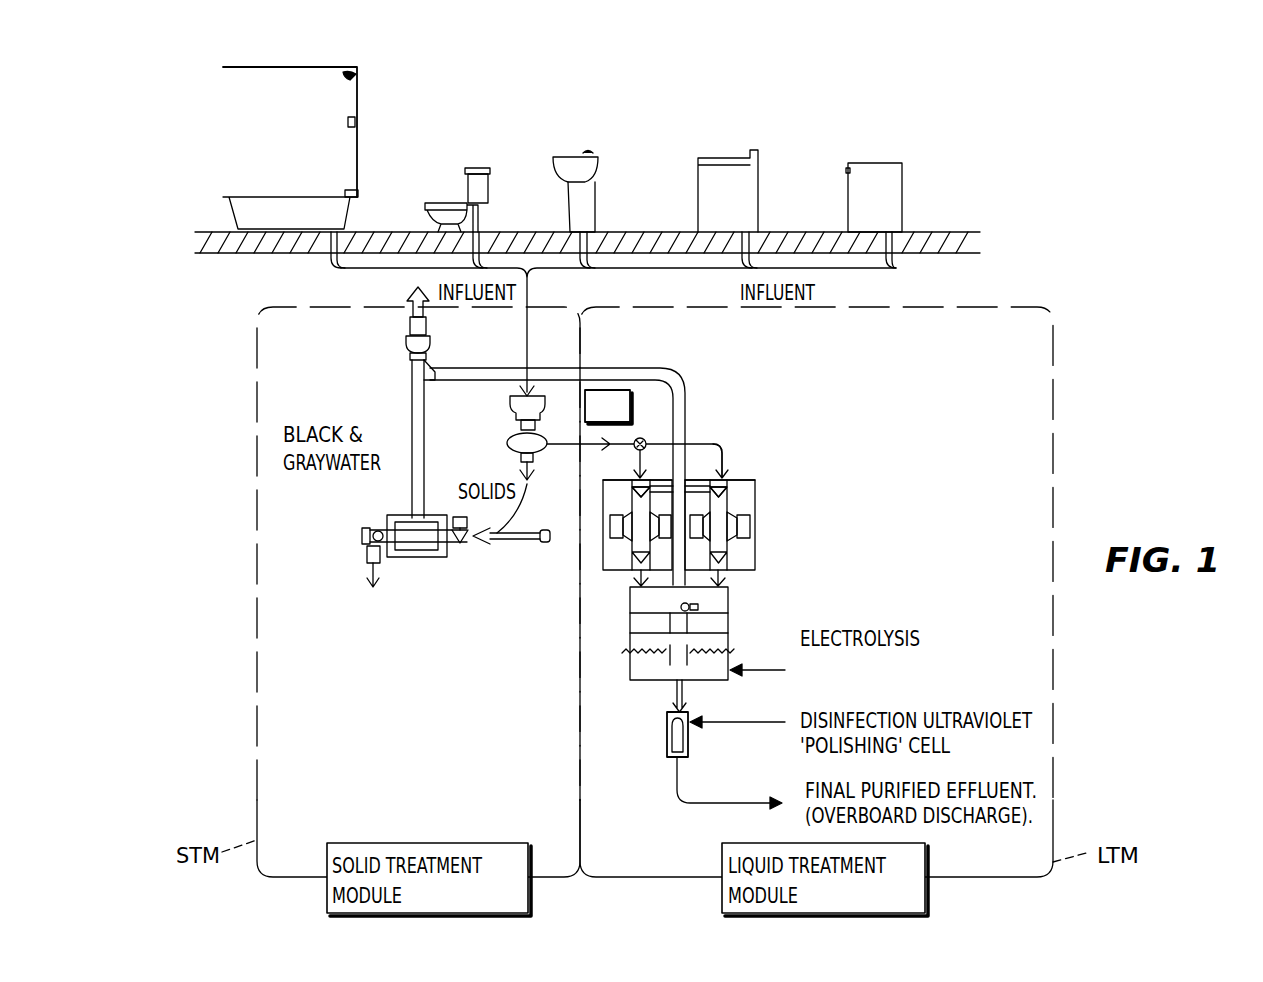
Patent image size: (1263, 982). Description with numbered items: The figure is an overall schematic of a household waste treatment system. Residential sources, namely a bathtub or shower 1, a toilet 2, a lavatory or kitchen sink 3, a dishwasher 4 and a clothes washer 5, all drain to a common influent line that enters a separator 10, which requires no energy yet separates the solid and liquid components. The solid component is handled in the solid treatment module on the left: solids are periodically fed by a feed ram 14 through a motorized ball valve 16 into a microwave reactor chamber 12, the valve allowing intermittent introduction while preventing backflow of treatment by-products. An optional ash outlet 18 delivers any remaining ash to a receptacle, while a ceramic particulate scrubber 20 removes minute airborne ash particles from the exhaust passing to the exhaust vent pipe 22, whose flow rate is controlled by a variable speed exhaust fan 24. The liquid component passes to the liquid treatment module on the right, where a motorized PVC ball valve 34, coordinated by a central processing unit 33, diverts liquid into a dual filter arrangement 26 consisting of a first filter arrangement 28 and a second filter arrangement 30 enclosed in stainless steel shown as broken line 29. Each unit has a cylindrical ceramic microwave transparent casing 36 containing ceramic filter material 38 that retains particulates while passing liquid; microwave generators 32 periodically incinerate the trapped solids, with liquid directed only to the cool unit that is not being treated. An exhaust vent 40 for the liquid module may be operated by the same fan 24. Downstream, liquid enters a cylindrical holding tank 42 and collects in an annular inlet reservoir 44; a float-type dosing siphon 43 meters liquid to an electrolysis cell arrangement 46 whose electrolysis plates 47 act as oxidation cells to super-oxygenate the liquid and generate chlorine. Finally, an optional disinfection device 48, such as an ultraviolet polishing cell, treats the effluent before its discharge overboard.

The bathtub or shower 1 is at (370, 130).
The toilet 2 is at (470, 164).
The lavatory or kitchen sink 3 is at (604, 158).
The dishwasher 4 is at (766, 176).
The clothes washer 5 is at (908, 190).
The separator 10 is at (503, 403).
The microwave reactor chamber 12 is at (420, 545).
The feed ram 14 is at (525, 548).
The motorized ball valve 16 is at (461, 548).
The ash outlet 18 is at (367, 556).
The ceramic particulate scrubber or filter 20 is at (402, 525).
The exhaust vent pipe 22 is at (412, 406).
The variable speed exhaust fan 24 is at (406, 343).
The dual filter arrangement 26 is at (688, 521).
The first filter arrangement 28 is at (606, 566).
The stainless steel enclosure 29 is at (760, 488).
The second filter arrangement 30 is at (752, 562).
The microwave generators 32 is at (750, 528).
The central processing unit 33 is at (606, 390).
The motorized PVC ball valve 34 is at (642, 437).
The ceramic microwave transparent casings 36 is at (603, 488).
The ceramic filter material 38 is at (712, 470).
The exhaust vent 40 is at (650, 368).
The cylindrical holding tank 42 is at (663, 653).
The dosing siphon 43 is at (700, 612).
The annular inlet reservoir 44 is at (630, 622).
The electrolysis cell arrangement 46 is at (637, 662).
The electrolysis plates 47 is at (690, 660).
The disinfection device 48 is at (692, 743).